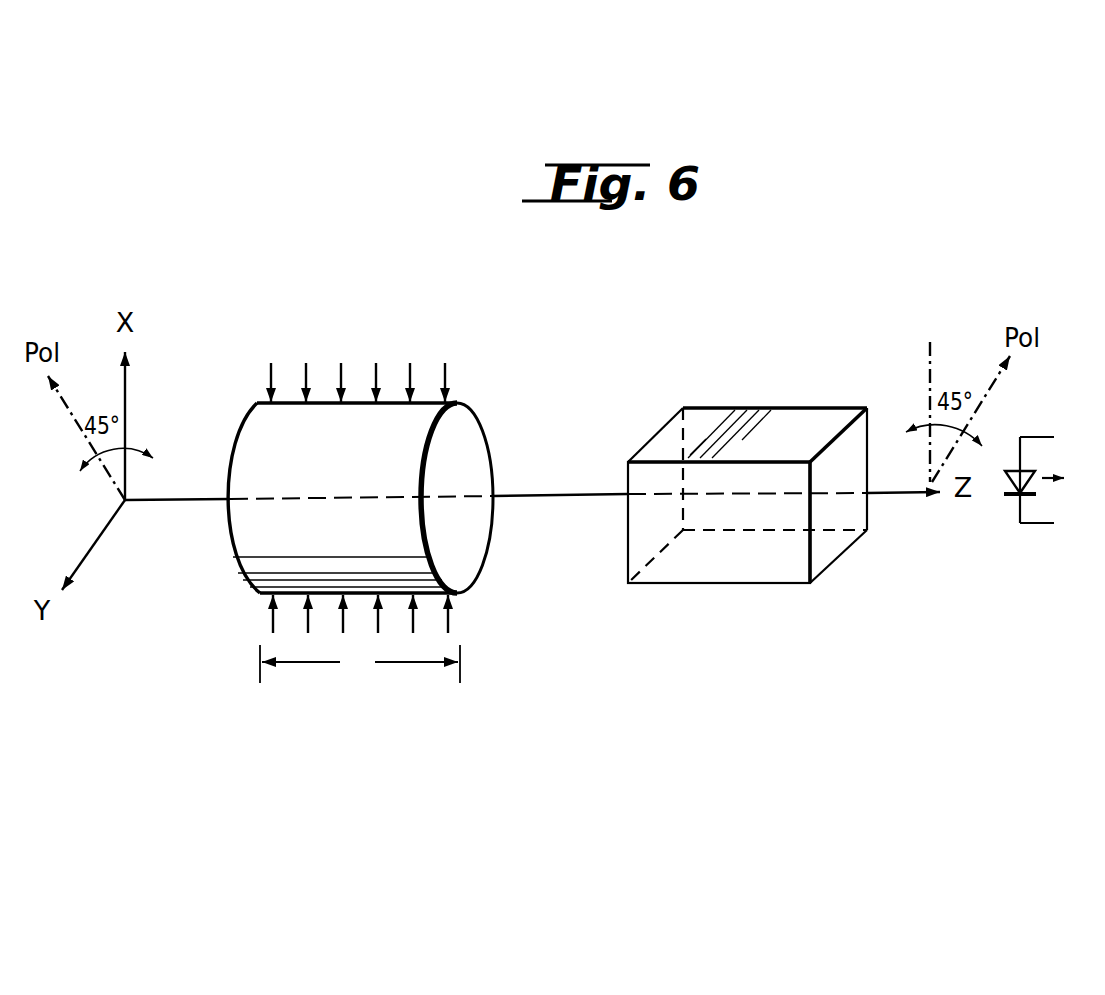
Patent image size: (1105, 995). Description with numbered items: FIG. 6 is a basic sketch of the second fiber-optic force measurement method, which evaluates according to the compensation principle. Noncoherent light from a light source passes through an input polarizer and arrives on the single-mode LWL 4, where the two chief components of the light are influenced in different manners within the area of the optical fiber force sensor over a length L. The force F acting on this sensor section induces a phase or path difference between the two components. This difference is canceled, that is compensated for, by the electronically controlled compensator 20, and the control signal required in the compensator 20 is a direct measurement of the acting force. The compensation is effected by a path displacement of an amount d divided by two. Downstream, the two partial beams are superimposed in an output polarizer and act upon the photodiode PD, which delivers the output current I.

The single-mode LWL 4 is at (417, 428).
The compensator 20 is at (769, 507).
The force F is at (375, 373).
The length L is at (360, 664).
The path displacement amount d is at (732, 416).
The photodiode PD is at (1015, 476).
The photocurrent I is at (1065, 478).